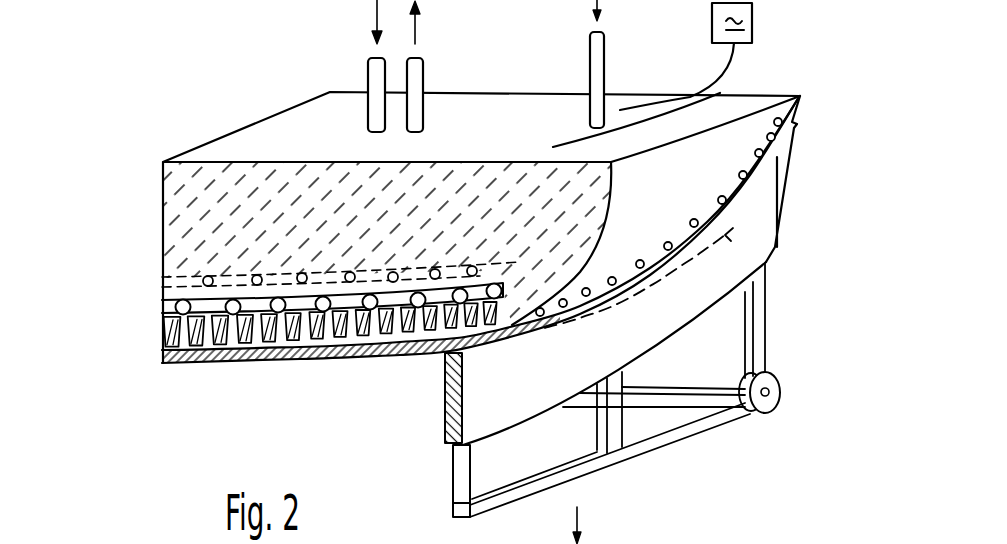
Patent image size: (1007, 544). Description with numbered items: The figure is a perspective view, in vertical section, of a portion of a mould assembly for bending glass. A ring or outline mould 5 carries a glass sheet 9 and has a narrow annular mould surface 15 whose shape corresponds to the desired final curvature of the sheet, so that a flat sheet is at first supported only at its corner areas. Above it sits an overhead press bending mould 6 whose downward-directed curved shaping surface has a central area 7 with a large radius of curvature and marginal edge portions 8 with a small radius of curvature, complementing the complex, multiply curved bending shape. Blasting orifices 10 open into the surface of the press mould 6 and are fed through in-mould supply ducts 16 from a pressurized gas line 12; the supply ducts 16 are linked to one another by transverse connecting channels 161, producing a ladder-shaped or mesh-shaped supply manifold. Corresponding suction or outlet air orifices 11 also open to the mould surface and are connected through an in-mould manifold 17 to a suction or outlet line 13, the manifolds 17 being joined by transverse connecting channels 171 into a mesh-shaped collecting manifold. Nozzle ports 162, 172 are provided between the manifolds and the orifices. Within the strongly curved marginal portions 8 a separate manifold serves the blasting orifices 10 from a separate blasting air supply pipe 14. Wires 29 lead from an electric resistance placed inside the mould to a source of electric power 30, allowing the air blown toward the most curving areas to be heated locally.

The ring mould 5 is at (663, 317).
The press bending mould 6 is at (291, 130).
The central area of shaping surface 7 is at (380, 366).
The marginal edge portions of shaping surface 8 is at (733, 236).
The glass sheet 9 is at (795, 124).
The blasting orifices 10 is at (693, 220).
The suction or outlet air orifices 11 is at (343, 366).
The pressurized gas line 12 is at (368, 75).
The suction or outlet line 13 is at (423, 73).
The blasting air supply pipe 14 is at (605, 53).
The mould surface 15 is at (443, 377).
The supply ducts 16 is at (323, 300).
The manifold 17 is at (393, 273).
The wires 29 is at (733, 75).
The source of electric power 30 is at (752, 25).
The transverse connecting channels 161 is at (160, 303).
The nozzle ports 162 is at (178, 325).
The transverse connecting channels 171 is at (160, 277).
The nozzle ports 172 is at (195, 367).